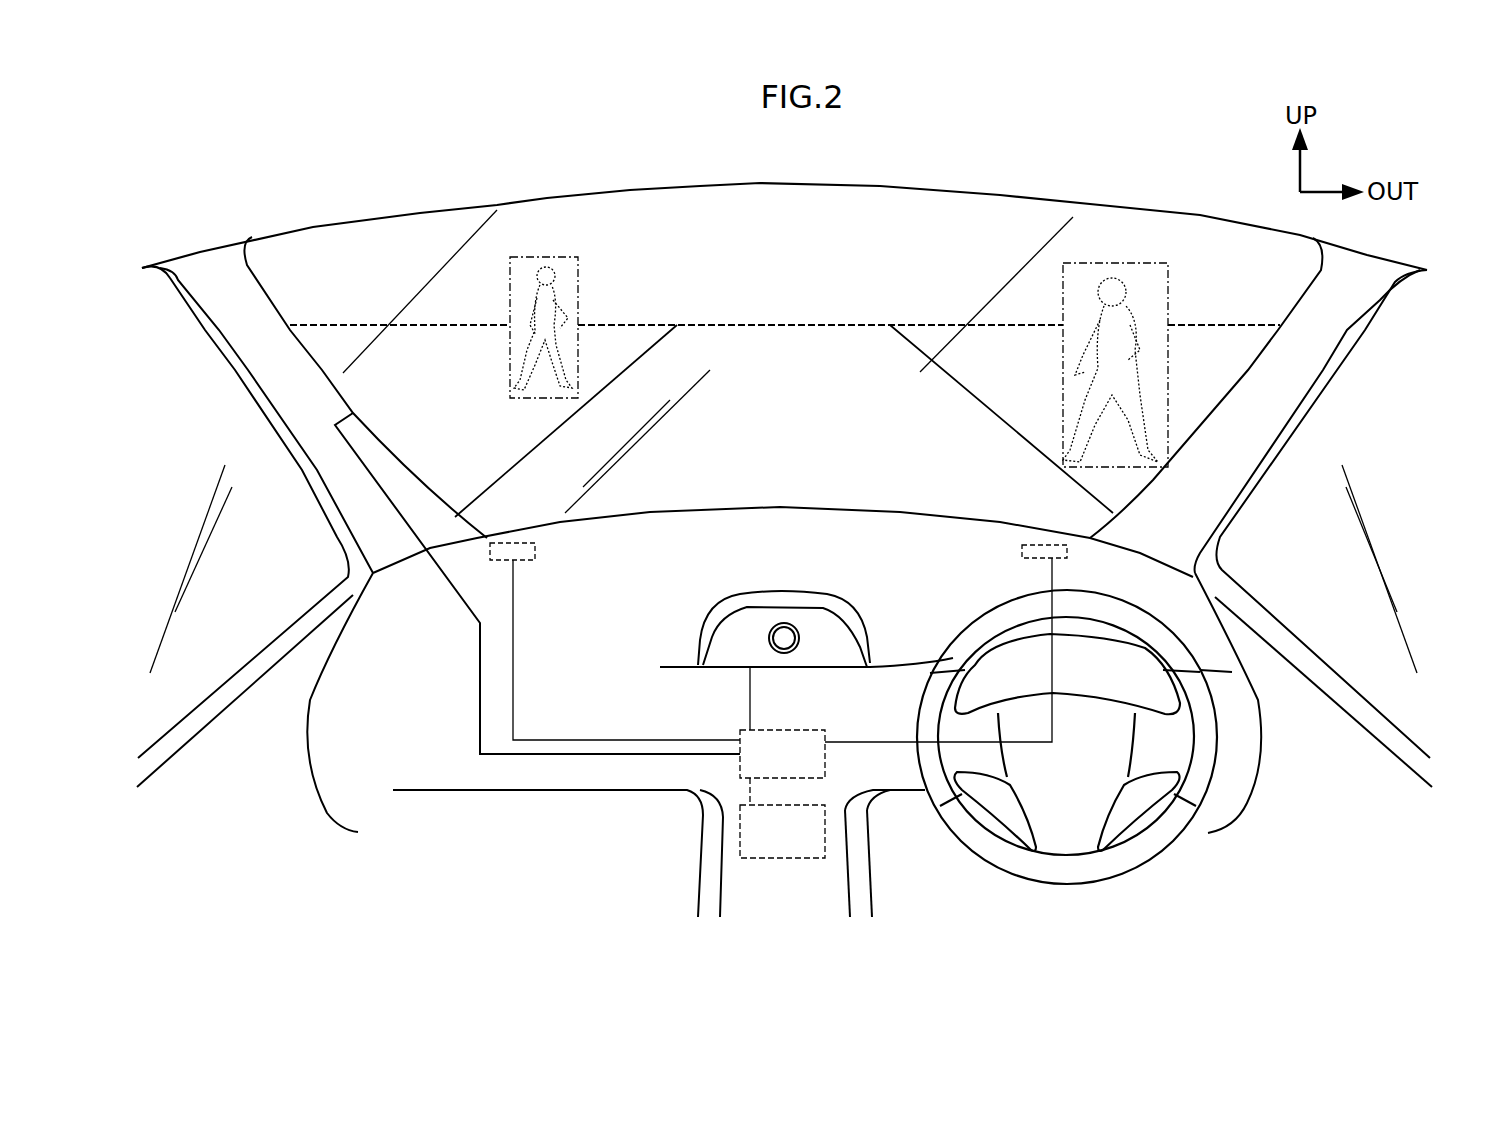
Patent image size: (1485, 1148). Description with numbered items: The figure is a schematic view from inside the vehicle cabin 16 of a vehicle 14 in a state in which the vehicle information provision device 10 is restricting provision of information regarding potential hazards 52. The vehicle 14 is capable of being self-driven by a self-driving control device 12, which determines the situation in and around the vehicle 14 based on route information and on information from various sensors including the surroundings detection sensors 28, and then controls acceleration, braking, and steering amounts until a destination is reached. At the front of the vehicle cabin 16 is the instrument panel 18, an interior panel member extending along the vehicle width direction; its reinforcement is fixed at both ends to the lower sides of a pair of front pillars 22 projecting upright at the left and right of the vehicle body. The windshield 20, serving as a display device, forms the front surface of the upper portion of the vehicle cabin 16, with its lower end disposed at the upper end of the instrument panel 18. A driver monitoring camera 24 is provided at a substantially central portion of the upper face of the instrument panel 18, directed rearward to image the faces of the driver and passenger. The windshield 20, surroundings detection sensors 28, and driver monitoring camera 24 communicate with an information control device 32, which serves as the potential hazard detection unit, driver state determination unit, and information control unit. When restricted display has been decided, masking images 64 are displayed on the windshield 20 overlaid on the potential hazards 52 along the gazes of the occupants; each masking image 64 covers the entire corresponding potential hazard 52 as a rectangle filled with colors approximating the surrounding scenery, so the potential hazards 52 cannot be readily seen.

The vehicle information provision device 10 is at (784, 189).
The self-driving control device 12 is at (768, 860).
The vehicle 14 is at (1073, 166).
The vehicle cabin 16 is at (950, 910).
The instrument panel 18 is at (888, 578).
The windshield 20 is at (357, 394).
The front pillars 22 is at (311, 492).
The driver monitoring camera 24 is at (790, 635).
The surroundings detection sensors 28 is at (537, 556).
The information control device 32 is at (805, 730).
The potential hazards 52 is at (566, 300).
The masking images 64 is at (578, 268).